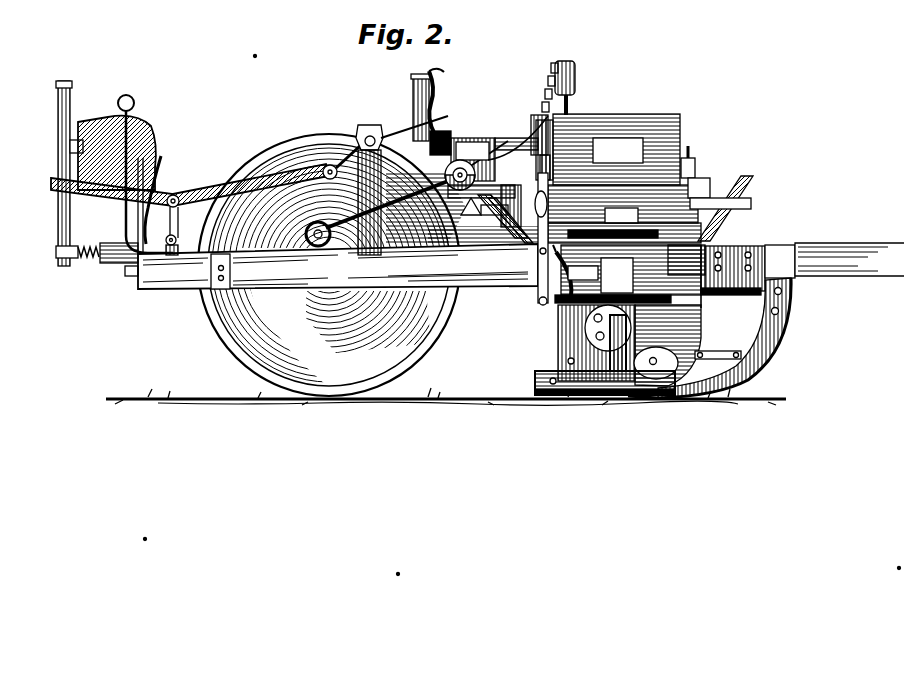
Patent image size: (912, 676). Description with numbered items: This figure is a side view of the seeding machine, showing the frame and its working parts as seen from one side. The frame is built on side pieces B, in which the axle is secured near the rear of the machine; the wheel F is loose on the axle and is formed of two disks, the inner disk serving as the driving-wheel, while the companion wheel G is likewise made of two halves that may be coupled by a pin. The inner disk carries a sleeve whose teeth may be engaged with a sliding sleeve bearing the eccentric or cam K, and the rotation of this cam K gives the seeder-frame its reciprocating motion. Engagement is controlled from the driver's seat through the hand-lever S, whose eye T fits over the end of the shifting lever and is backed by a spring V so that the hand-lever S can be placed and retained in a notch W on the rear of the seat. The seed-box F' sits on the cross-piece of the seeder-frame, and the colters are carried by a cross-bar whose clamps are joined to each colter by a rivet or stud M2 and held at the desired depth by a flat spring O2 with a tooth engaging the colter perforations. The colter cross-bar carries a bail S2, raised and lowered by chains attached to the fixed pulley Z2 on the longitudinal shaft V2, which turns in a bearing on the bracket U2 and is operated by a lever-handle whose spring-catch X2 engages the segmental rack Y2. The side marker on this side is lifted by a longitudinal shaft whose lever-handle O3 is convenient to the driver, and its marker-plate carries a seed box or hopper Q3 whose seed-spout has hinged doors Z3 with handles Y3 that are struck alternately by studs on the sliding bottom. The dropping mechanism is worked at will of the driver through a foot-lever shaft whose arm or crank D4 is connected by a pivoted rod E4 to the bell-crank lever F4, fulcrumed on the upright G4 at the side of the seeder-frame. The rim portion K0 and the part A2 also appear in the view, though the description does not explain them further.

The hand-lever S is at (50, 100).
The lever-handle O3 is at (145, 174).
The pivoted rod E4 is at (190, 185).
The arm or crank D4 is at (182, 225).
The spring V is at (113, 242).
The eye T is at (58, 252).
The side piece B is at (331, 257).
The wheel F is at (332, 265).
The wheel rim K0 is at (329, 265).
The bell-crank lever F4 is at (334, 173).
The upright G4 is at (407, 193).
The eccentric or cam K is at (402, 185).
The rivet or stud M2 is at (414, 107).
The spring-catch X2 is at (442, 112).
The segmental or circular rack Y2 is at (450, 130).
The bracket U2 is at (480, 178).
The longitudinal shaft V2 is at (508, 181).
The fixed pulley Z2 is at (519, 147).
The bail S2 is at (567, 88).
The wheel G is at (608, 149).
The seed-box F' is at (629, 182).
The tongue A2 is at (786, 242).
The handle Y3 is at (528, 272).
The notch W is at (627, 274).
The seed box or hopper Q3 is at (617, 275).
The flat spring O2 is at (709, 338).
The hinged door Z3 is at (605, 392).